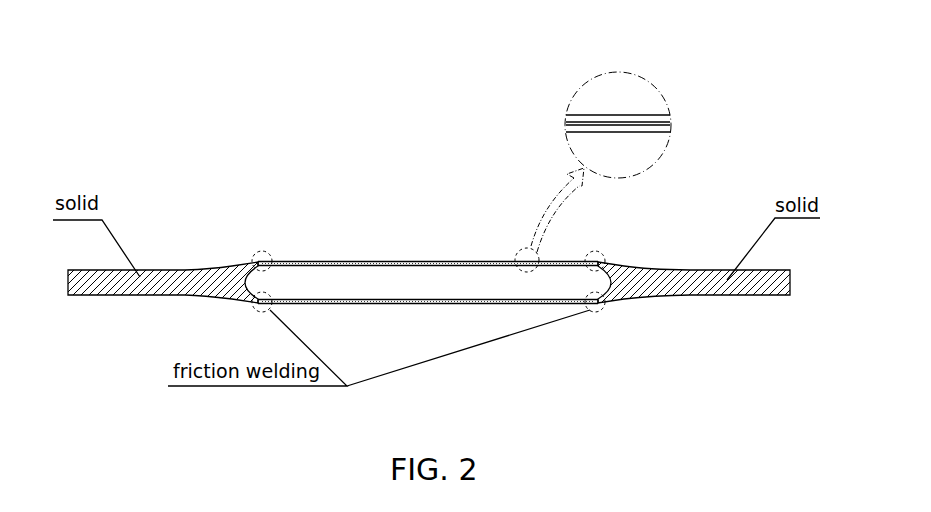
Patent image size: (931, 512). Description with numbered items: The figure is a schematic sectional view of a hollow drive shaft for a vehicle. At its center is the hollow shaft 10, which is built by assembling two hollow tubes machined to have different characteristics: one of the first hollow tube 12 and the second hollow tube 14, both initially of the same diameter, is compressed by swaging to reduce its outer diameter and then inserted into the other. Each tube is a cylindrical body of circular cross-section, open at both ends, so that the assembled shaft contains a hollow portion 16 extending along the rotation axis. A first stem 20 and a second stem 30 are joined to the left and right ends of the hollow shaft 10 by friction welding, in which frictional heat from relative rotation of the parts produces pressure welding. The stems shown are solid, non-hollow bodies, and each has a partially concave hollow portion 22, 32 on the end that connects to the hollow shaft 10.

The hollow shaft 10 is at (325, 247).
The first hollow tube 12 is at (422, 262).
The second hollow tube 14 is at (377, 262).
The hollow portion 16 is at (470, 270).
The first stem 20 is at (118, 306).
The hollow portion 22 is at (248, 278).
The second stem 30 is at (724, 306).
The hollow portion 32 is at (613, 293).